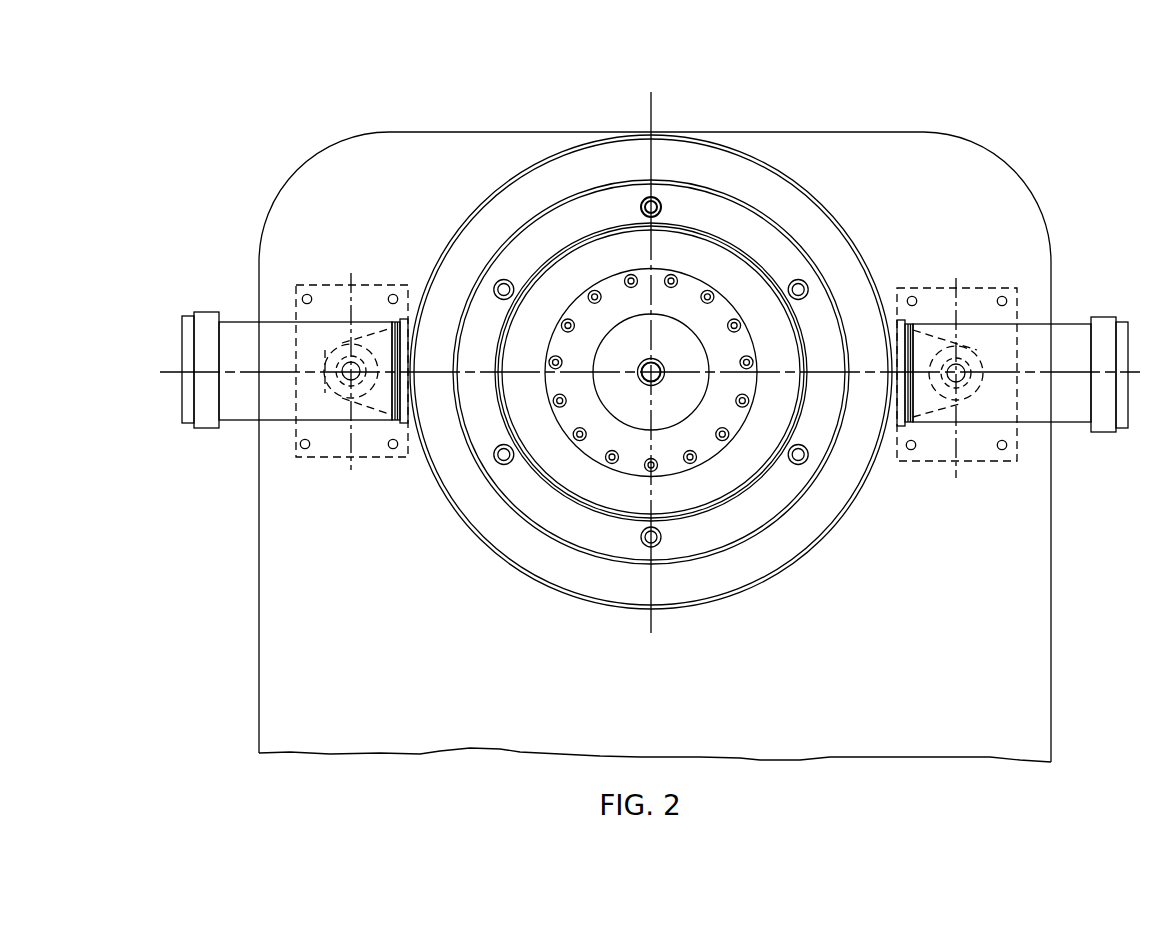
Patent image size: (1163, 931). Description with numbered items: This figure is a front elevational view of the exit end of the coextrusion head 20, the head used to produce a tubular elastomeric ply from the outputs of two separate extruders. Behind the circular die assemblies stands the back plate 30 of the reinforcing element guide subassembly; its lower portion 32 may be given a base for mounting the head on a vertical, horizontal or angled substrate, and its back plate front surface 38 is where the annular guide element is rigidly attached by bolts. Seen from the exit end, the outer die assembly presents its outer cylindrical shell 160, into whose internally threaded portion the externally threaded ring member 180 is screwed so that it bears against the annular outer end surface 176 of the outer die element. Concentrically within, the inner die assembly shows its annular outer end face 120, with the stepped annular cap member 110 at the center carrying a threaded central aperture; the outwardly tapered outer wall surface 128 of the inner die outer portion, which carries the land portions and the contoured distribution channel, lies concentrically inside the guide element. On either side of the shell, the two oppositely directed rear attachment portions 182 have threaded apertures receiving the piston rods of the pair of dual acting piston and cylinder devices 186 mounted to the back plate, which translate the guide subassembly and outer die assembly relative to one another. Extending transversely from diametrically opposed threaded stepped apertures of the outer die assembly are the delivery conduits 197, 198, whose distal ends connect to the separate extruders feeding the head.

The coextrusion head 20 is at (199, 182).
The back plate 30 is at (1028, 184).
The lower portion 32 is at (408, 733).
The back plate front surface 38 is at (972, 170).
The stepped annular cap member 110 is at (680, 343).
The annular outer end face 120 is at (640, 297).
The outer wall surface 128 is at (653, 377).
The outer cylindrical shell 160 is at (753, 177).
The annular outer end surface 176 is at (723, 505).
The externally threaded ring member 180 is at (792, 262).
The rear attachment portion 182 is at (923, 403).
The piston and cylinder device 186 is at (929, 302).
The delivery conduit 197 is at (246, 331).
The delivery conduit 198 is at (1062, 332).